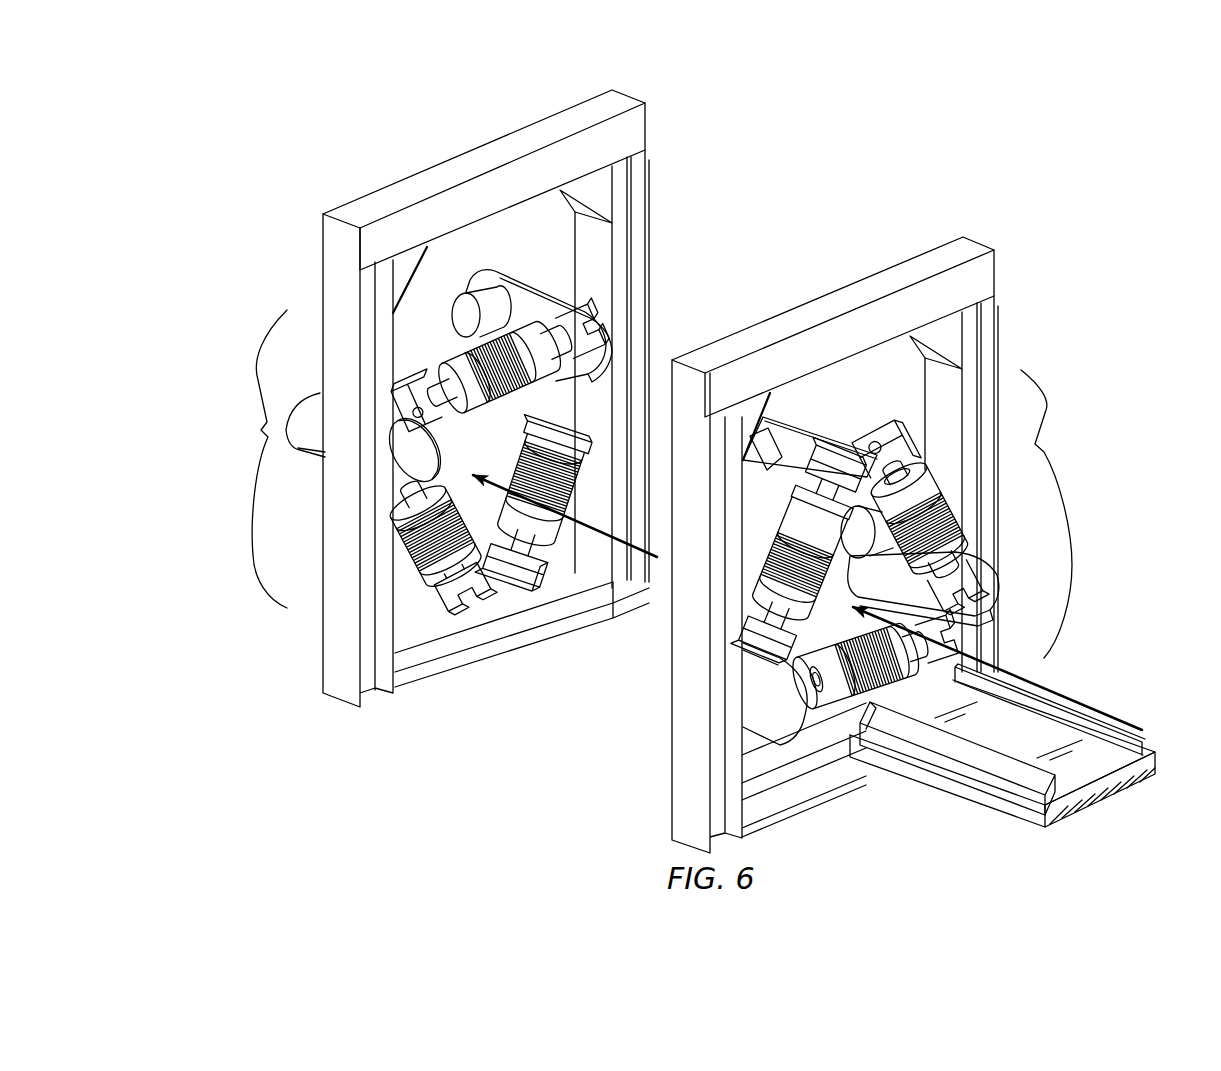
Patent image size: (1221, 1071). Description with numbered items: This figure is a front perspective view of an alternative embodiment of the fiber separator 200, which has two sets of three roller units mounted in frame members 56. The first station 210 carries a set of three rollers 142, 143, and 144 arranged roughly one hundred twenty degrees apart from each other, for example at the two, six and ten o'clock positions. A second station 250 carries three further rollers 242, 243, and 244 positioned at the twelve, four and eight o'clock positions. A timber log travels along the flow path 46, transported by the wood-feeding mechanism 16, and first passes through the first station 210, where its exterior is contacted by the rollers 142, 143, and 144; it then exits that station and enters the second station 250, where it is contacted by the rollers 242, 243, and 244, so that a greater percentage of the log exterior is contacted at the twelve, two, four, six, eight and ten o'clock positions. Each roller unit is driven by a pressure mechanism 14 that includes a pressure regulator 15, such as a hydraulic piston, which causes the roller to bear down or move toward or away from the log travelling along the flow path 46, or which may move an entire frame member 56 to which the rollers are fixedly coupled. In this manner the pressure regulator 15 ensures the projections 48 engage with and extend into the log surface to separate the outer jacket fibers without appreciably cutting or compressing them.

The fiber separator 200 is at (385, 78).
The first station 210 is at (1074, 440).
The second station 250 is at (240, 413).
The pressure mechanism 14 is at (532, 268).
The pressure regulator 15 is at (533, 307).
The wood-feeding mechanism 16 is at (1107, 718).
The flow path 46 is at (625, 578).
The projections 48 is at (517, 458).
The frame member 56 is at (390, 560).
The roller 142 is at (927, 470).
The roller 143 is at (752, 500).
The roller 144 is at (845, 690).
The roller 242 is at (462, 357).
The roller 243 is at (435, 573).
The roller 244 is at (545, 525).